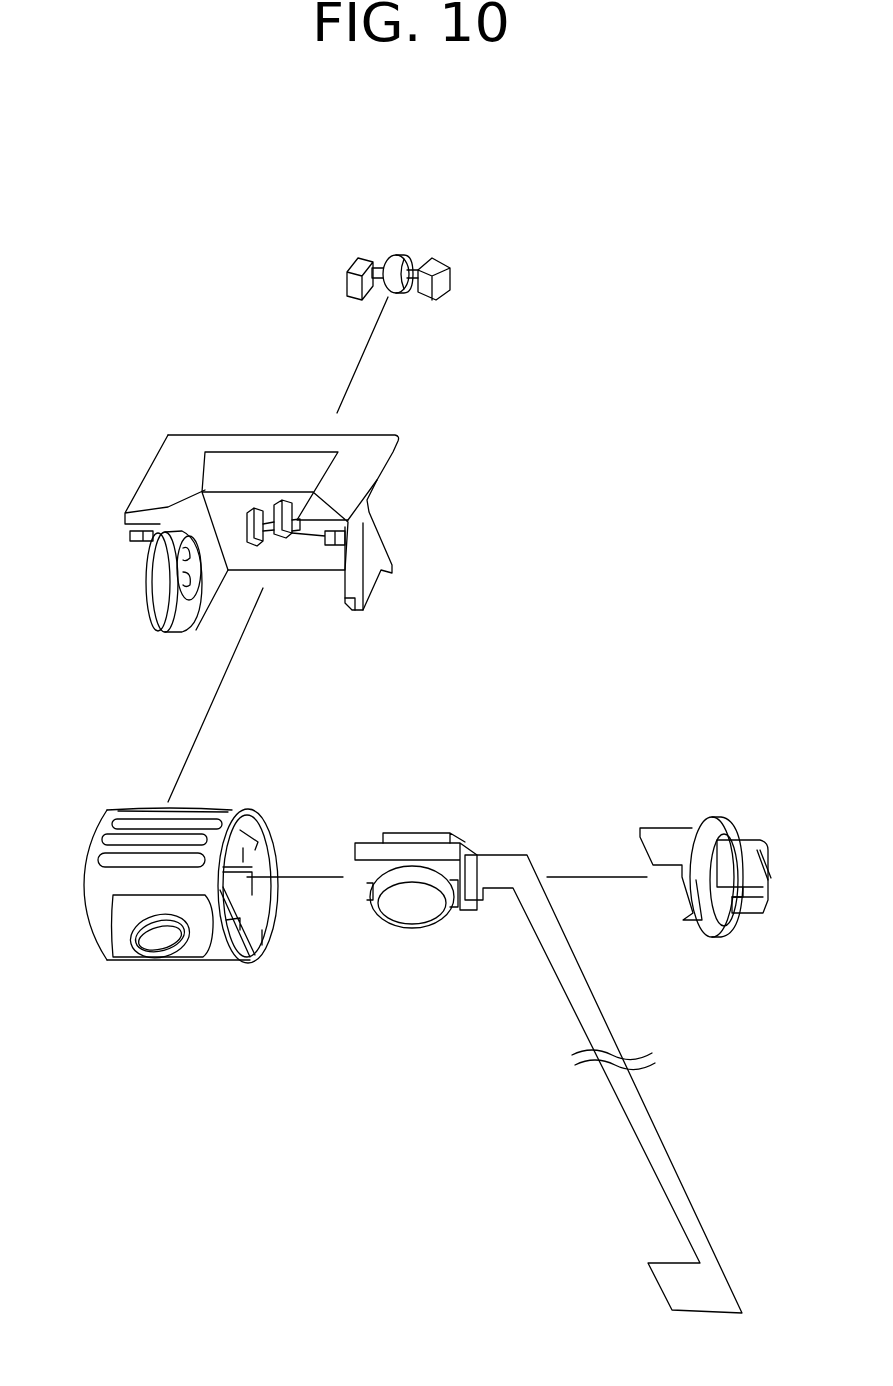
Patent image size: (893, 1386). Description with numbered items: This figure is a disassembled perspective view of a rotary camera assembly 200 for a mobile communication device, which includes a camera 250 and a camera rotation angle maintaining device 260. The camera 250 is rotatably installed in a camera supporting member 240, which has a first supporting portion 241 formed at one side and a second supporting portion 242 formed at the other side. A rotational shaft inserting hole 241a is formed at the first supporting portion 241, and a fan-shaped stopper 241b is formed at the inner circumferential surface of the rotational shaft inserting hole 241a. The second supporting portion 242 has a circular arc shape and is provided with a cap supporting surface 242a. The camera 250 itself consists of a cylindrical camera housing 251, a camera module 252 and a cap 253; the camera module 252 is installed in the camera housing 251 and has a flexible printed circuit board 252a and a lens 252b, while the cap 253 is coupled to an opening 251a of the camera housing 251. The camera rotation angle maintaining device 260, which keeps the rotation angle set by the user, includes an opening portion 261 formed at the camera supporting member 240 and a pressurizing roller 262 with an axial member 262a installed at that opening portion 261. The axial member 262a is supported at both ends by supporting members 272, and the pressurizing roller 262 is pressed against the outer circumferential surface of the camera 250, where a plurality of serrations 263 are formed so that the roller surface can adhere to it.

The rotary camera assembly 200 is at (437, 144).
The camera supporting member 240 is at (410, 427).
The first supporting portion 241 is at (192, 623).
The rotational shaft inserting hole 241a is at (183, 588).
The stopper 241b is at (185, 540).
The second supporting portion 242 is at (367, 572).
The cap supporting surface 242a is at (347, 600).
The camera 250 is at (128, 967).
The cylindrical camera housing 251 is at (215, 948).
The opening 251a is at (260, 825).
The camera module 252 is at (487, 1005).
The flexible printed circuit board 252a is at (497, 872).
The lens 252b is at (408, 910).
The cap 253 is at (700, 818).
The camera rotation angle maintaining device 260 is at (465, 258).
The opening portion 261 is at (263, 507).
The pressurizing roller 262 is at (398, 262).
The axial member 262a is at (383, 268).
The serrations 263 is at (125, 840).
The supporting members 272 is at (350, 267).